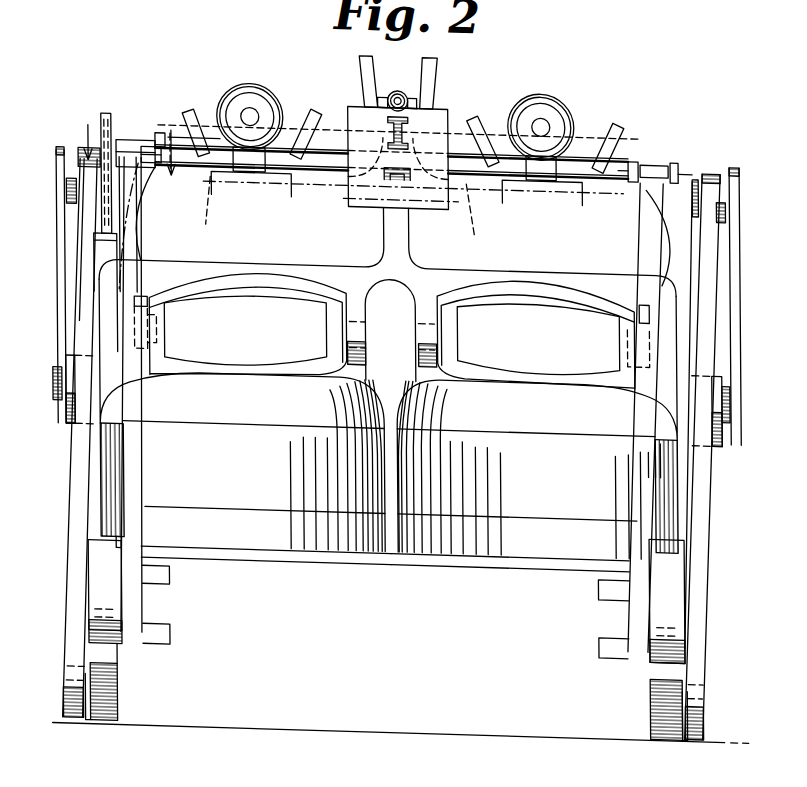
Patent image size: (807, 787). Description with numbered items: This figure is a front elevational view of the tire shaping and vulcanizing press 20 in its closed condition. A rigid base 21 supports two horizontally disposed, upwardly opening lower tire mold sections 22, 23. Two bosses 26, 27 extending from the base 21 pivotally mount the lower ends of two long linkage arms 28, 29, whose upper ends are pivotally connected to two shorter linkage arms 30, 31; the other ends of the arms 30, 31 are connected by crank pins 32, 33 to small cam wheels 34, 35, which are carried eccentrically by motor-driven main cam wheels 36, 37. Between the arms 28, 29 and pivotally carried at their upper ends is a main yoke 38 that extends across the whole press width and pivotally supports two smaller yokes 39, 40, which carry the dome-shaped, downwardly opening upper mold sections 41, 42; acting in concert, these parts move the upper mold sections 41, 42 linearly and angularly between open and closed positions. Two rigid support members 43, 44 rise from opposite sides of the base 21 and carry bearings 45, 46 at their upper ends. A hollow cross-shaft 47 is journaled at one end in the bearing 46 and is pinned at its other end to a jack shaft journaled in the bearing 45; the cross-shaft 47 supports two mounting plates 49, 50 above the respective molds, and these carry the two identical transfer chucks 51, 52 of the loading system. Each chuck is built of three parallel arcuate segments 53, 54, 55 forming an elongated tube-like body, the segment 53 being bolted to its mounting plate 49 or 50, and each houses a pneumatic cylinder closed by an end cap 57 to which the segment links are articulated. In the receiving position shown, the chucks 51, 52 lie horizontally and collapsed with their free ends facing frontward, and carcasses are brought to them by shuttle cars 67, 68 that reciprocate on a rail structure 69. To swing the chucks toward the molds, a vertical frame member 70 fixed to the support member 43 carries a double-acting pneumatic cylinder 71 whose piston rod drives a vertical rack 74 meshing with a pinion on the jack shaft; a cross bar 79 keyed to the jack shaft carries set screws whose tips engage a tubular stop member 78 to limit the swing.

The tire shaping and vulcanizing press 20 is at (58, 536).
The base 21 is at (362, 733).
The tire mold section 22 is at (252, 548).
The tire mold section 23 is at (512, 548).
The boss 26 is at (98, 729).
The boss 27 is at (664, 732).
The linkage arm 28 is at (70, 620).
The linkage arm 29 is at (700, 630).
The linkage arm 30 is at (58, 298).
The linkage arm 31 is at (738, 322).
The crank pin 32 is at (55, 386).
The crank pin 33 is at (733, 405).
The cam wheel 34 is at (66, 430).
The cam wheel 35 is at (723, 432).
The main cam wheel 36 is at (90, 484).
The main cam wheel 37 is at (700, 526).
The main yoke 38 is at (412, 228).
The yoke 39 is at (252, 282).
The yoke 40 is at (535, 284).
The mold section 41 is at (348, 402).
The mold section 42 is at (430, 403).
The support member 43 is at (141, 480).
The support member 44 is at (660, 478).
The bearing 45 is at (138, 150).
The bearing 46 is at (663, 157).
The cross-shaft 47 is at (337, 188).
The mounting plate 49 is at (258, 177).
The mounting plate 50 is at (494, 178).
The transfer chuck 51 is at (247, 76).
The transfer chuck 52 is at (573, 81).
The arcuate segment 53 is at (287, 200).
The arcuate segment 54 is at (268, 93).
The arcuate segment 55 is at (229, 99).
The end cap 57 is at (260, 117).
The shuttle car 67 is at (212, 183).
The shuttle car 68 is at (590, 178).
The rail structure 69 is at (472, 197).
The frame member 70 is at (117, 181).
The pneumatic cylinder 71 is at (100, 272).
The rack 74 is at (110, 122).
The stop member 78 is at (150, 171).
The cross bar 79 is at (165, 140).